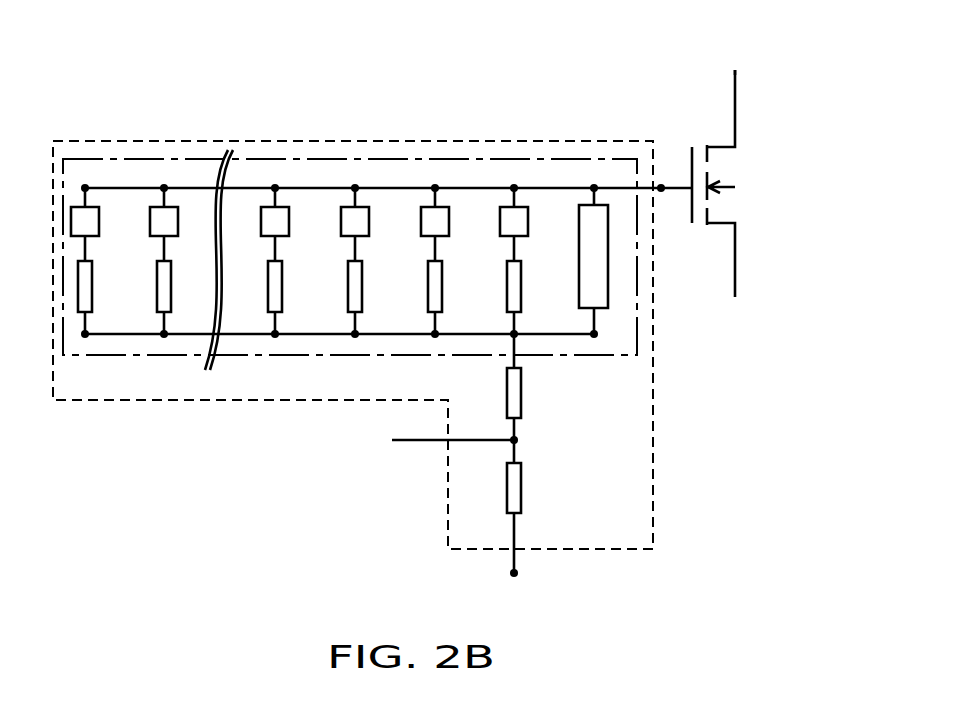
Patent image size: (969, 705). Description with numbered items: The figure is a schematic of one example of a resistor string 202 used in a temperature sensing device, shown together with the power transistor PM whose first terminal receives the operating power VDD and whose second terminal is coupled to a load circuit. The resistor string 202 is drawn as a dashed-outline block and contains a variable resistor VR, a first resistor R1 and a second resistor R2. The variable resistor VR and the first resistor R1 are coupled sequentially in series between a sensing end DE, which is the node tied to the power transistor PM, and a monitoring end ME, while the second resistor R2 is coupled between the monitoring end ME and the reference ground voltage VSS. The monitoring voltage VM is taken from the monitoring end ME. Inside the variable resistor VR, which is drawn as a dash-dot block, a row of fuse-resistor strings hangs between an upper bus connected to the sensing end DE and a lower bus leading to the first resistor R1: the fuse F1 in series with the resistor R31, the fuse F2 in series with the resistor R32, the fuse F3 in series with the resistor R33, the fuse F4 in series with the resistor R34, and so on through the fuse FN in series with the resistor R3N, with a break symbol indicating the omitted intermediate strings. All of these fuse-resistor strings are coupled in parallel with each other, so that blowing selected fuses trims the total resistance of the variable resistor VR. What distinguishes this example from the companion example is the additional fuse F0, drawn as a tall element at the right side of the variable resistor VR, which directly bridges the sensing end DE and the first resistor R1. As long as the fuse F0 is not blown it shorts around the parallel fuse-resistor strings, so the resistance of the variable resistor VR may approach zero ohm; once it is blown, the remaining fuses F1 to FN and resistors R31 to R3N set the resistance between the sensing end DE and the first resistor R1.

The resistor string 202 is at (654, 456).
The variable resistor VR is at (425, 158).
The fuse FN is at (102, 213).
The resistor R3N is at (112, 285).
The fuse F4 is at (291, 213).
The resistor R34 is at (300, 285).
The fuse F3 is at (371, 213).
The resistor R33 is at (380, 285).
The fuse F2 is at (451, 213).
The resistor R32 is at (460, 285).
The fuse F1 is at (530, 213).
The resistor R31 is at (539, 285).
The fuse F0 is at (609, 263).
The sensing end DE is at (661, 186).
The power transistor PM is at (717, 183).
The operating power VDD is at (734, 54).
The first resistor R1 is at (529, 387).
The monitoring end ME is at (516, 439).
The monitoring voltage VM is at (433, 441).
The second resistor R2 is at (529, 506).
The reference ground voltage VSS is at (511, 592).